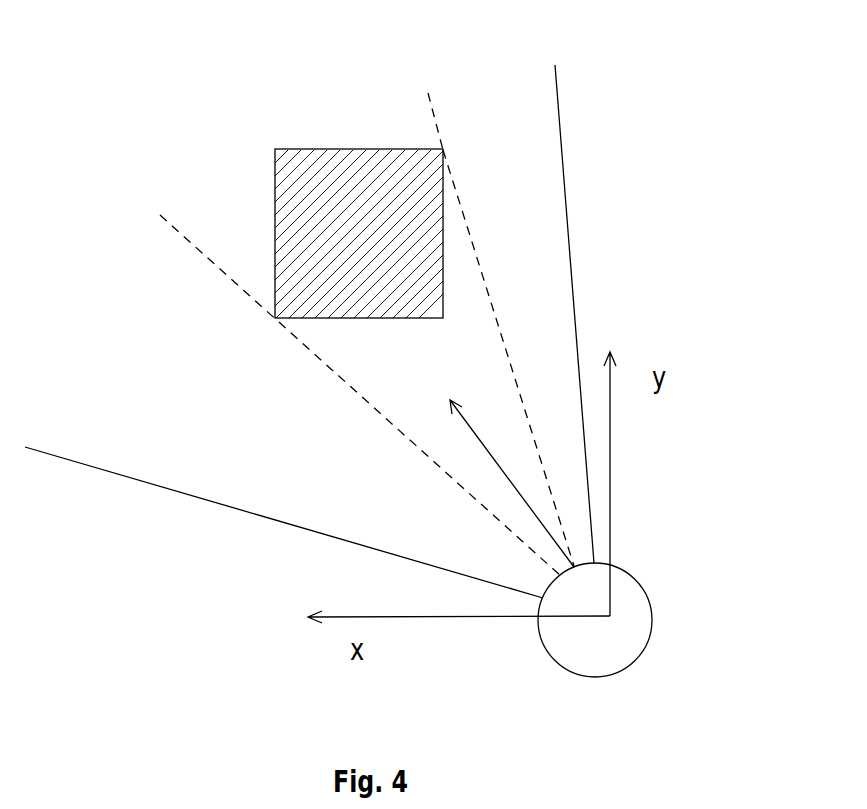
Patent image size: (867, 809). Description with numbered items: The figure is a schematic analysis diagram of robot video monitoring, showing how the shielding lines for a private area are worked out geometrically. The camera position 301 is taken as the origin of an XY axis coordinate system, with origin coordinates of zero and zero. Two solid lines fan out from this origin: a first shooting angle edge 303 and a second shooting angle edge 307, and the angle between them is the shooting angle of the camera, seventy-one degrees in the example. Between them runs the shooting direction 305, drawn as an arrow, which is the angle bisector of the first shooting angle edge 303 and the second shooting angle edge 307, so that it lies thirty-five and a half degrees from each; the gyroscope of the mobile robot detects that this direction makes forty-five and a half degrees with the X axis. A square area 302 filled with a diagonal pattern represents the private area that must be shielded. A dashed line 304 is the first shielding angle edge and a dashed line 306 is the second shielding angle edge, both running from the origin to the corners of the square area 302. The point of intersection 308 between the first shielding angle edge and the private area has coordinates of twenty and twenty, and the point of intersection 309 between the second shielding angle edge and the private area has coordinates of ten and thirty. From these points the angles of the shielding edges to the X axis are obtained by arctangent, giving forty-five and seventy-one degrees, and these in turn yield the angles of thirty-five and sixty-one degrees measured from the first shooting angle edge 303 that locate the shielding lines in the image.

The camera position 301 is at (574, 650).
The square area with a diagonal pattern 302 is at (275, 167).
The first shooting angle edge 303 is at (182, 492).
The first shielding angle edge 304 is at (350, 390).
The shooting direction 305 is at (493, 472).
The second shielding angle edge 306 is at (608, 223).
The second shooting angle edge 307 is at (660, 115).
The point of intersection 308 is at (270, 320).
The point of intersection 309 is at (443, 148).